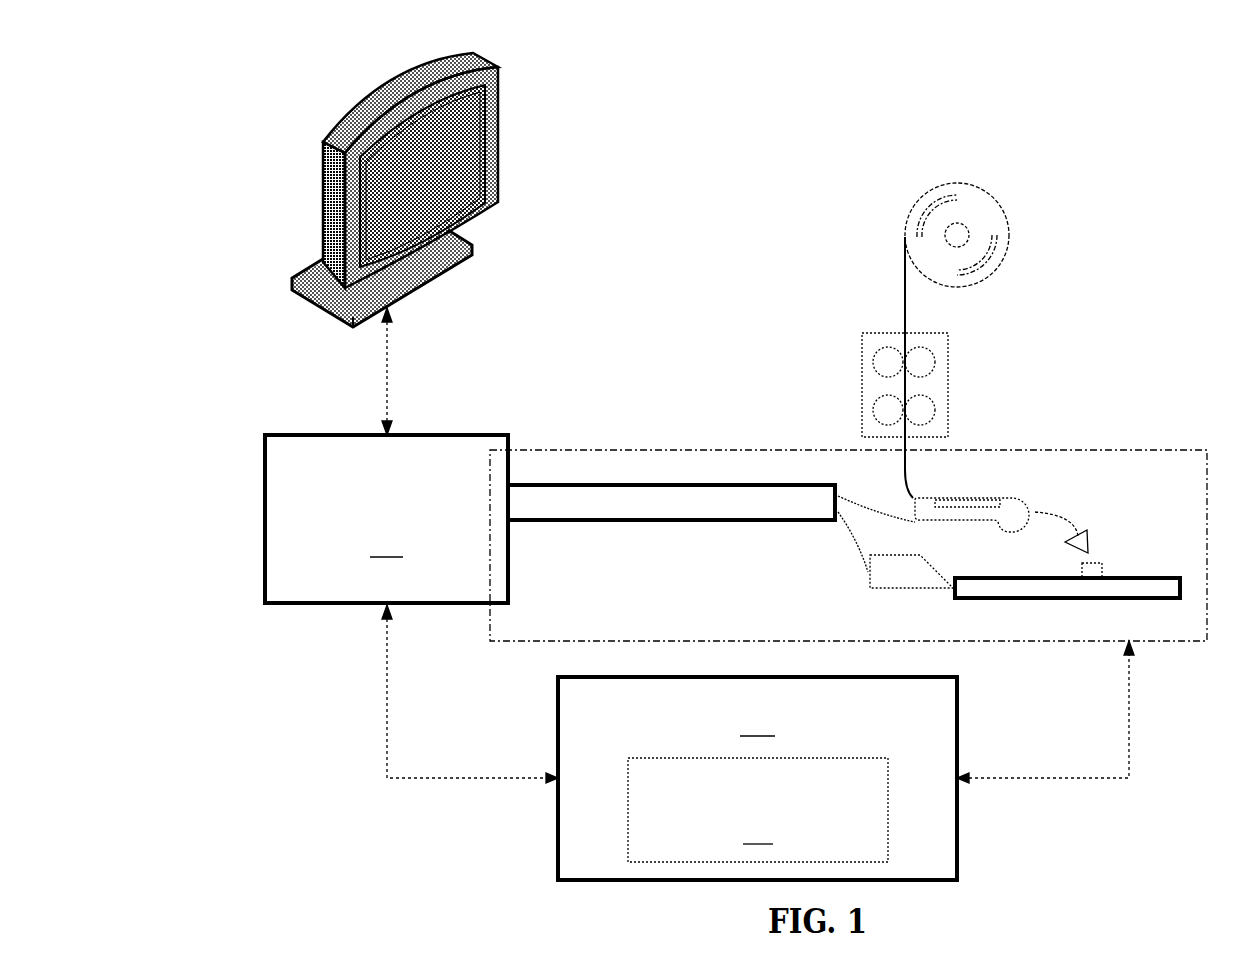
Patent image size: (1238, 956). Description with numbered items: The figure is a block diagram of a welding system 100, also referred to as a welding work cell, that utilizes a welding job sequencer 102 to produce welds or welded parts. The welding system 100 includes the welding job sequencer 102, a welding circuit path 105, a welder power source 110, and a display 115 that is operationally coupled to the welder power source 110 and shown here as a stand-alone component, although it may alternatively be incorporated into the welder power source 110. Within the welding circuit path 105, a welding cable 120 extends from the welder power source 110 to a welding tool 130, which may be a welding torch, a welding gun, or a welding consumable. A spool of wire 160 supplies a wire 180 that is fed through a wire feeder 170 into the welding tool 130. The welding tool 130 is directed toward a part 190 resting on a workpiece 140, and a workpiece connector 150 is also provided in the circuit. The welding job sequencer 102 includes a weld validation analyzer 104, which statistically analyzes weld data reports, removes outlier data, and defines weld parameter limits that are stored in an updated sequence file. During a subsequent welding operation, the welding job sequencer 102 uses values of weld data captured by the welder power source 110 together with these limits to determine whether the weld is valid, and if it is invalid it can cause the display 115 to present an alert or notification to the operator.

The welding system 100 is at (212, 62).
The welding job sequencer 102 is at (757, 778).
The weld validation analyzer 104 is at (758, 810).
The welding circuit path 105 is at (634, 450).
The welder power source 110 is at (386, 519).
The display 115 is at (323, 142).
The welding cable 120 is at (634, 522).
The welding tool 130 is at (1030, 503).
The workpiece 140 is at (1068, 600).
The workpiece connector 150 is at (883, 592).
The spool of wire 160 is at (915, 200).
The wire feeder 170 is at (948, 360).
The wire 180 is at (905, 475).
The part 190 is at (1102, 570).